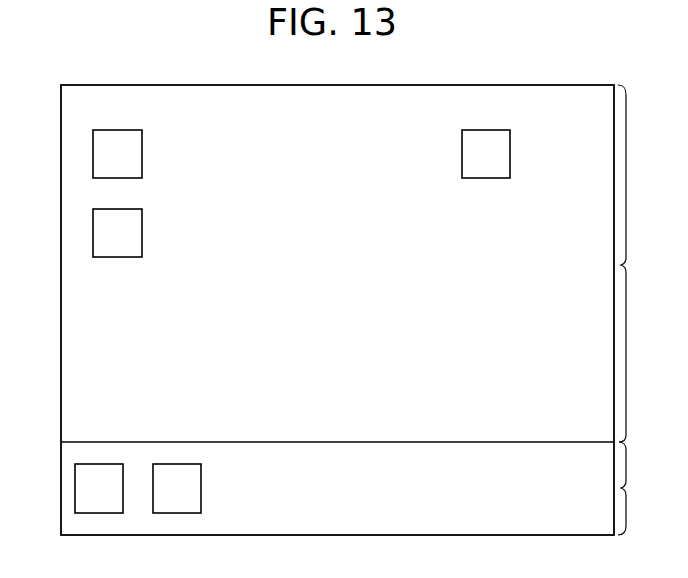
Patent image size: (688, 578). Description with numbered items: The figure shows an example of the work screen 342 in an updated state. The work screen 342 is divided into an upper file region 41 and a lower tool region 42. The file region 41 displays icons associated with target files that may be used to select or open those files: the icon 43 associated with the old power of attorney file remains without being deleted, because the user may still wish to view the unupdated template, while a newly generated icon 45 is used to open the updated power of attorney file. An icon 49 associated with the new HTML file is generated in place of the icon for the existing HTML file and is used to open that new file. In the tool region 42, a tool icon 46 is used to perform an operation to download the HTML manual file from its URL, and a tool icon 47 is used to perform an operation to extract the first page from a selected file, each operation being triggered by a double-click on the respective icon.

The work screen 342 is at (520, 85).
The file region 41 is at (639, 263).
The tool region 42 is at (361, 488).
The icon 43 is at (142, 148).
The icon 45 is at (142, 227).
The icon 49 is at (510, 150).
The tool icon 46 is at (75, 485).
The tool icon 47 is at (201, 485).